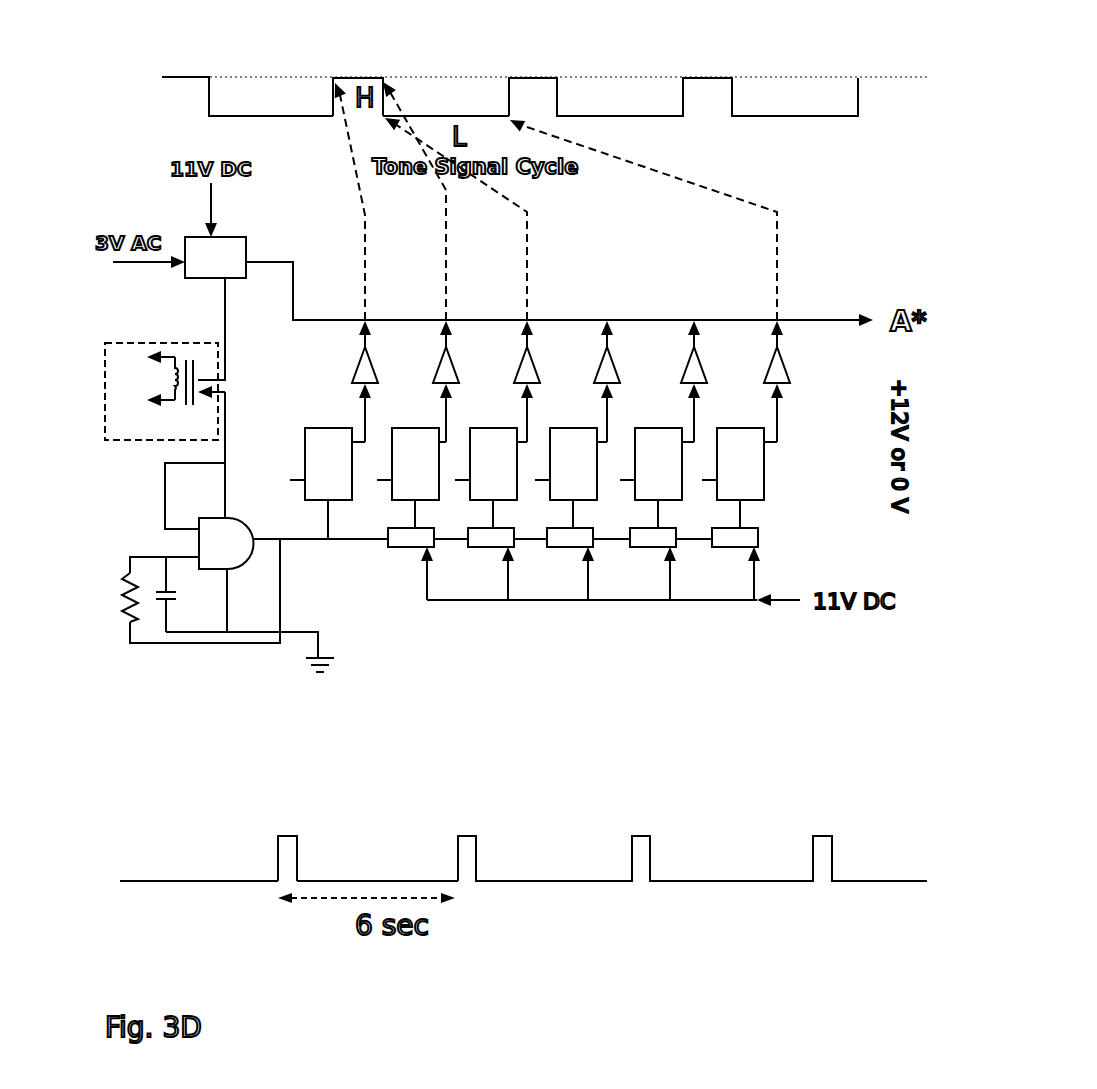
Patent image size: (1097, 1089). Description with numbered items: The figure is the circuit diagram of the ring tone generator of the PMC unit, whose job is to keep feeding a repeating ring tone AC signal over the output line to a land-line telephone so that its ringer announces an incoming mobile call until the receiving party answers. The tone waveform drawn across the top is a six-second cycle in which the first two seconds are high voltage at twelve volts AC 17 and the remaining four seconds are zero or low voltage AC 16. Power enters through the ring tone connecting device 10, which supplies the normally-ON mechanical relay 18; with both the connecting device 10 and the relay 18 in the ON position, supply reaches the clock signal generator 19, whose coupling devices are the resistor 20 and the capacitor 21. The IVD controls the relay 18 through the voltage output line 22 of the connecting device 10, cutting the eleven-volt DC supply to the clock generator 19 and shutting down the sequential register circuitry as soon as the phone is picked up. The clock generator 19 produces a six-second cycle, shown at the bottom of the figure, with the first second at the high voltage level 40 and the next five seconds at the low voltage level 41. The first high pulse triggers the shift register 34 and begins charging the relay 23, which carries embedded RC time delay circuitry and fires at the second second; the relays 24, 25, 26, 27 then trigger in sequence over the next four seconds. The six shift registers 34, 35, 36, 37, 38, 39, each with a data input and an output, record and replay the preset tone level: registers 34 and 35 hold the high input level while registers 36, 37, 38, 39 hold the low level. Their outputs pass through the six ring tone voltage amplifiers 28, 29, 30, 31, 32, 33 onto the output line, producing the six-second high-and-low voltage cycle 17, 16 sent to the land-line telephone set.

The ring tone connecting device 10 is at (215, 257).
The low voltage AC 16 is at (446, 105).
The high voltage AC 17 is at (358, 82).
The mechanical relay 18 is at (115, 335).
The clock signal generator 19 is at (226, 543).
The resistor 20 is at (112, 597).
The capacitor 21 is at (183, 594).
The voltage output line 22 is at (229, 390).
The relay 23 is at (411, 564).
The relay 24 is at (491, 564).
The relay 25 is at (570, 564).
The relay 26 is at (653, 564).
The relay 27 is at (736, 564).
The amplifier 28 is at (380, 352).
The amplifier 29 is at (461, 352).
The amplifier 30 is at (542, 352).
The amplifier 31 is at (622, 352).
The amplifier 32 is at (709, 352).
The amplifier 33 is at (792, 352).
The shift register 34 is at (327, 461).
The shift register 35 is at (414, 456).
The shift register 36 is at (492, 456).
The shift register 37 is at (572, 456).
The shift register 38 is at (657, 456).
The shift register 39 is at (739, 456).
The high voltage level 40 is at (290, 840).
The low voltage level 41 is at (377, 862).